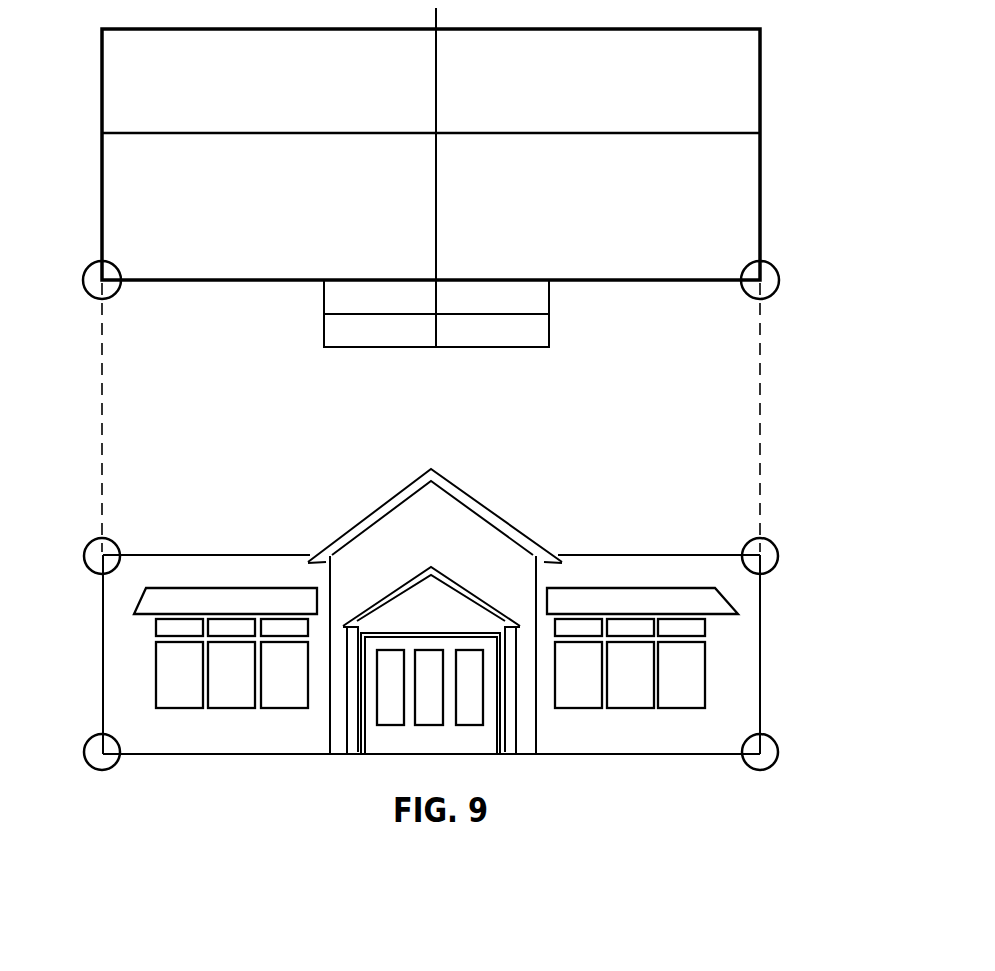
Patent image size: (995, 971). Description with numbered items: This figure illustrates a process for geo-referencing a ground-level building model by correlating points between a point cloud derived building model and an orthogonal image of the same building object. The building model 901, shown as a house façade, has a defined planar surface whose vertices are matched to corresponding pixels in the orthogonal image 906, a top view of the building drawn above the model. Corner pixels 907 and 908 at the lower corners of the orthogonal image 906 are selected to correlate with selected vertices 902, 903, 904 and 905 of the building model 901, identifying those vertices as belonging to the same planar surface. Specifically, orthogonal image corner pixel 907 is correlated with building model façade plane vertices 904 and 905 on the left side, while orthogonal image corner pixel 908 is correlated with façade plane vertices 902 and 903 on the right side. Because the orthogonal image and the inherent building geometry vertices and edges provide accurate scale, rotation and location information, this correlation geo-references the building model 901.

The building model 901 is at (662, 754).
The building model façade plane vertex 902 is at (778, 747).
The building model façade plane vertex 903 is at (778, 563).
The building model façade plane vertex 904 is at (83, 553).
The building model façade plane vertex 905 is at (84, 752).
The orthogonal image 906 is at (642, 282).
The orthogonal image corner pixel 907 is at (86, 267).
The orthogonal image corner pixel 908 is at (778, 277).